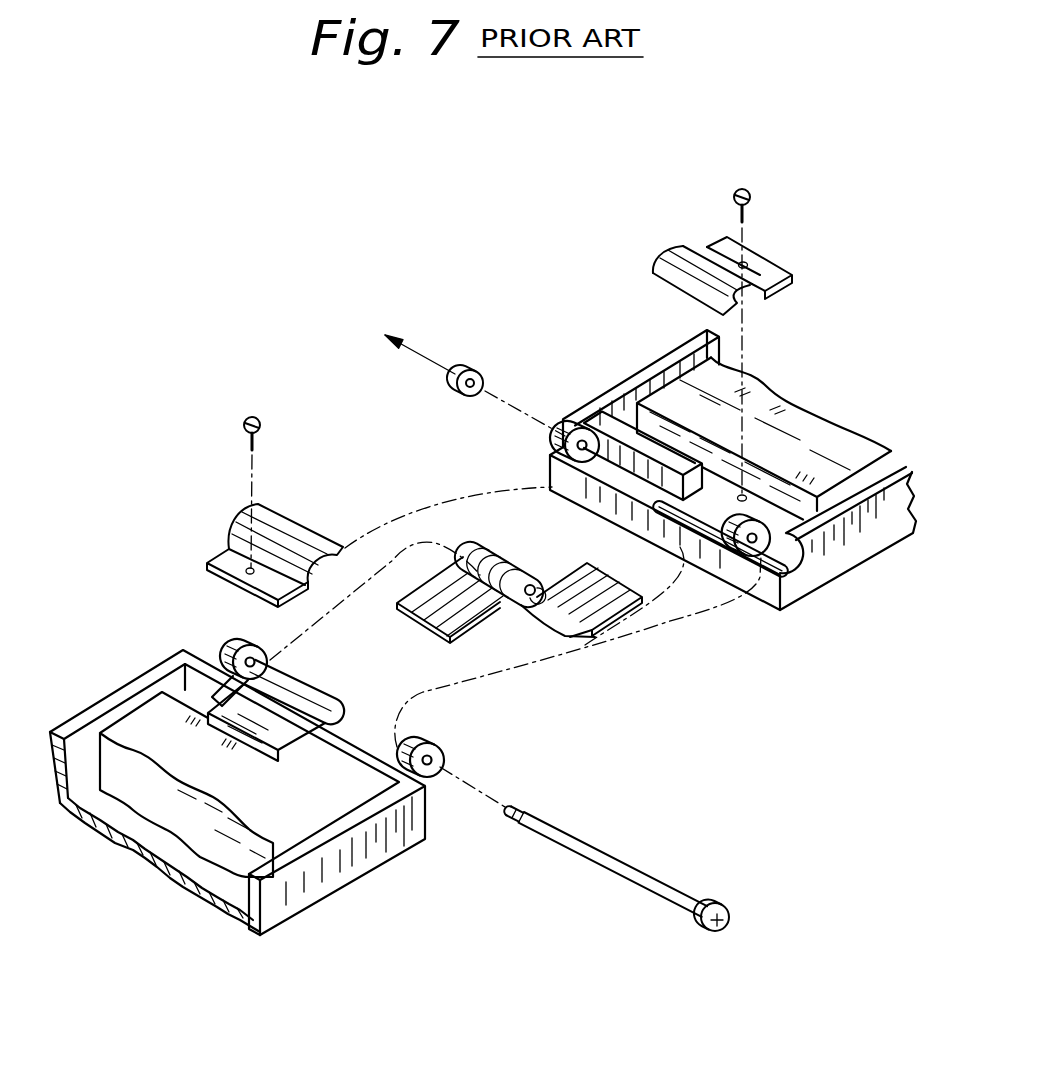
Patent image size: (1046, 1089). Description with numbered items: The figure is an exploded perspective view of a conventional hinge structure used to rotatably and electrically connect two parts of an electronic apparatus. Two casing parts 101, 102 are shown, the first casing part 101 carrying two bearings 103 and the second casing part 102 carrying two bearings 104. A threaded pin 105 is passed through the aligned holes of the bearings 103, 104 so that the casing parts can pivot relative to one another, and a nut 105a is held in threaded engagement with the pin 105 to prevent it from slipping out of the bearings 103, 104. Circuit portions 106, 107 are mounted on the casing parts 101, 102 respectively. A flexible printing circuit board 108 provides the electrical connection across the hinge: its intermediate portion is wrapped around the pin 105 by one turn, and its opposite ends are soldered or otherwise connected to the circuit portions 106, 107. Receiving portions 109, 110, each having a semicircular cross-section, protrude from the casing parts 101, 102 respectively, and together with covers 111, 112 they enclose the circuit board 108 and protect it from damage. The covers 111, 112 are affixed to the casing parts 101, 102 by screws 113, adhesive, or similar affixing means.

The casing part 101 is at (333, 872).
The casing part 102 is at (792, 597).
The bearings 103 is at (236, 650).
The bearings 104 is at (564, 418).
The threaded pin 105 is at (587, 853).
The nut 105a is at (466, 368).
The circuit portion 106 is at (192, 826).
The circuit portion 107 is at (812, 445).
The flexible printing circuit board 108 is at (584, 632).
The receiving portion 109 is at (338, 702).
The receiving portion 110 is at (680, 527).
The cover 111 is at (240, 518).
The cover 112 is at (676, 253).
The screws 113 is at (258, 436).